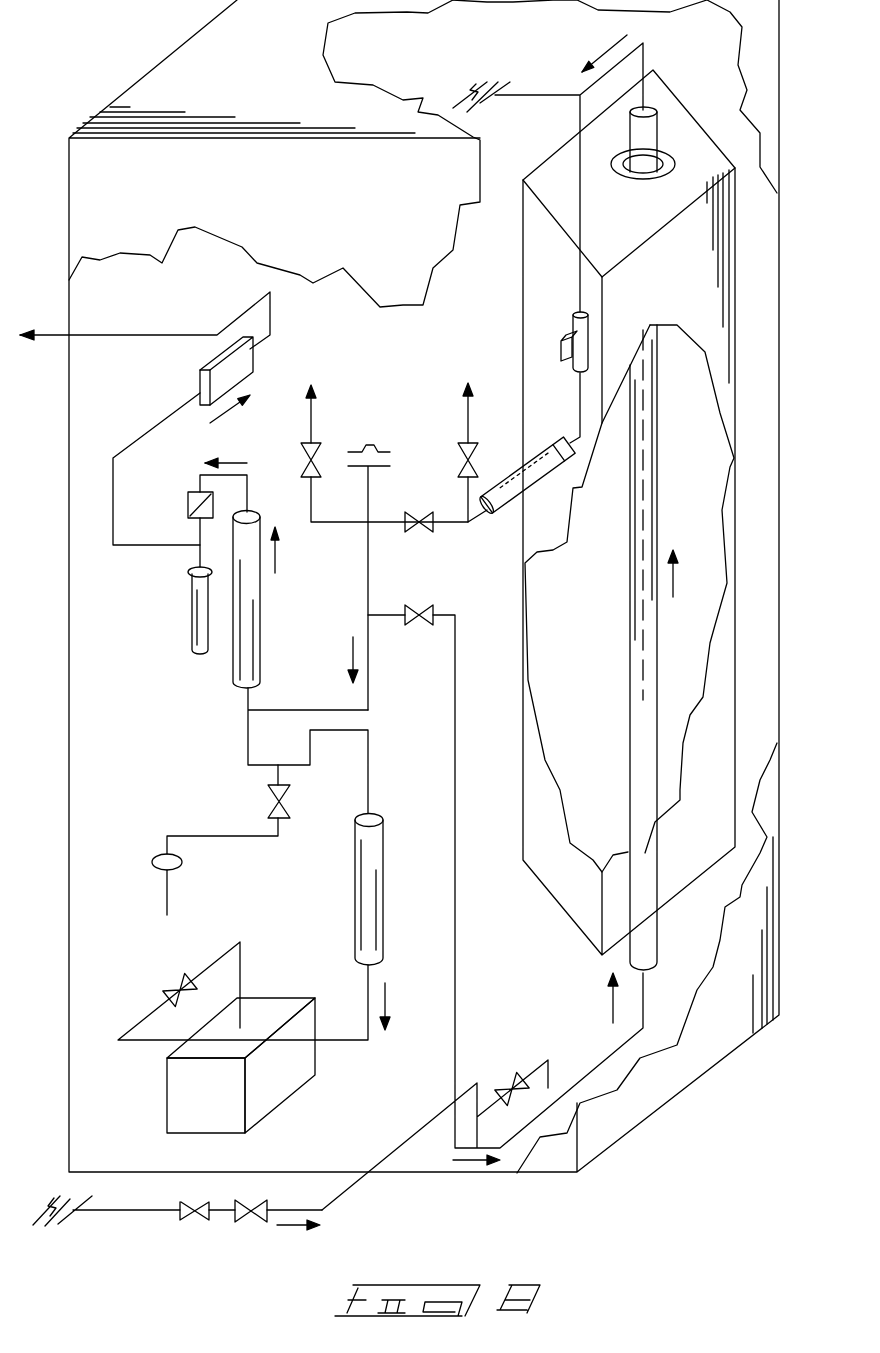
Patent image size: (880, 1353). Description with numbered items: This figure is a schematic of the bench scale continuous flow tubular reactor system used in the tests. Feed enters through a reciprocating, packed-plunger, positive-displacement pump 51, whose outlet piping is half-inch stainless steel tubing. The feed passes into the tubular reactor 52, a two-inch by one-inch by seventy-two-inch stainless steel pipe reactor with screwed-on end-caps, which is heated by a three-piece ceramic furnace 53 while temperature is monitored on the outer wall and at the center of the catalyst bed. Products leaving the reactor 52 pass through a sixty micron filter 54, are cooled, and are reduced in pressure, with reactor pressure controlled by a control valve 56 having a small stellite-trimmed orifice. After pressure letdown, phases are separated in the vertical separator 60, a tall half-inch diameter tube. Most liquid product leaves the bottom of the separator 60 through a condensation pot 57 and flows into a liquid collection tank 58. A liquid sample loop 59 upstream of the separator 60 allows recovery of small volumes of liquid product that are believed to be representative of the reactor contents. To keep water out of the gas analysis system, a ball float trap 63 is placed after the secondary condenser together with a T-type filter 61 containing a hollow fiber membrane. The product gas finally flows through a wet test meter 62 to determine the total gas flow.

The pump 51 is at (139, 1210).
The tubular reactor 52 is at (627, 623).
The ceramic furnace 53 is at (555, 921).
The filter 54 is at (573, 320).
The control valve 56 is at (420, 532).
The condensation pot 57 is at (383, 845).
The liquid collection tank 58 is at (241, 1065).
The liquid sample loop 59 is at (262, 851).
The vertical separator 60 is at (272, 667).
The T-type filter 61 is at (188, 503).
The wet test meter 62 is at (207, 358).
The ball float trap 63 is at (178, 603).